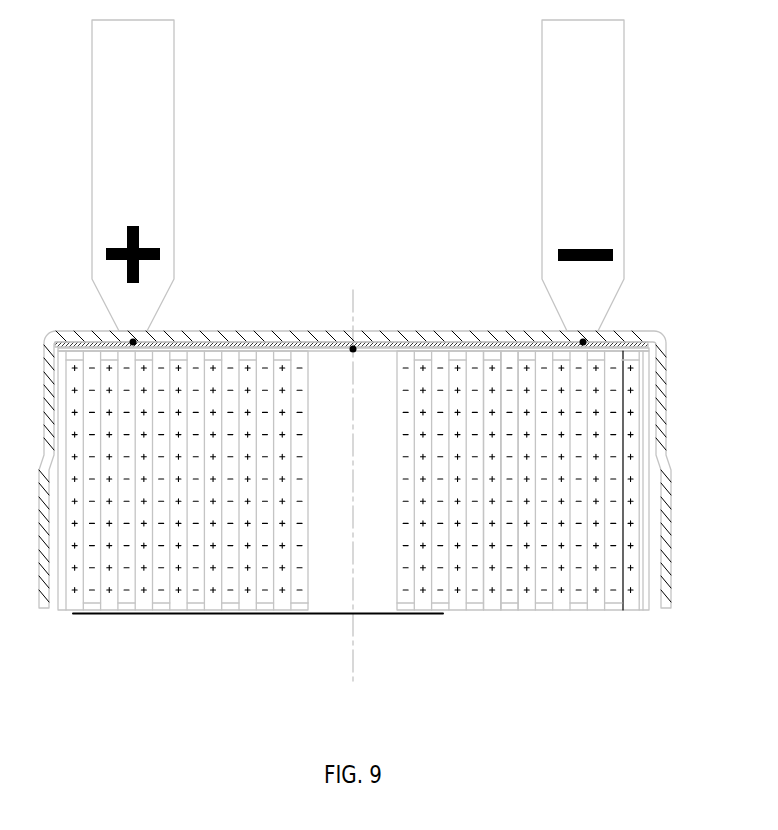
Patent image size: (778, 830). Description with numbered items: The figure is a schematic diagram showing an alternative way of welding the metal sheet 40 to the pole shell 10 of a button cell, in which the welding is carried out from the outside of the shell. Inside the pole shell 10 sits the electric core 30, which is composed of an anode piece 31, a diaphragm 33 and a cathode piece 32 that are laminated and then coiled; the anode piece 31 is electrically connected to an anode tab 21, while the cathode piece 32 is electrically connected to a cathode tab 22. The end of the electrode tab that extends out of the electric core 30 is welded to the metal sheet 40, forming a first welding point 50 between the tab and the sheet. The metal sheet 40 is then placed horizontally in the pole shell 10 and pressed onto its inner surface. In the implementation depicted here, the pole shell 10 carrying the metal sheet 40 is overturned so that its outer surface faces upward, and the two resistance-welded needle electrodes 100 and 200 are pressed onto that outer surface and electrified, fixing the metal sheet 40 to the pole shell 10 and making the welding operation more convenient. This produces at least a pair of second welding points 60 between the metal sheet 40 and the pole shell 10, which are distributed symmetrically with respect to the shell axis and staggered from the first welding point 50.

The needle electrode 100 is at (138, 168).
The needle electrode 200 is at (568, 180).
The pole shell 10 is at (397, 337).
The metal sheet 40 is at (293, 345).
The cathode tab 22 is at (323, 351).
The first welding point 50 is at (355, 346).
The second welding point 60 is at (133, 342).
The electric core 30 is at (353, 532).
The anode piece 31 is at (489, 578).
The diaphragm 33 is at (500, 593).
The cathode piece 32 is at (513, 581).
The anode tab 21 is at (246, 617).